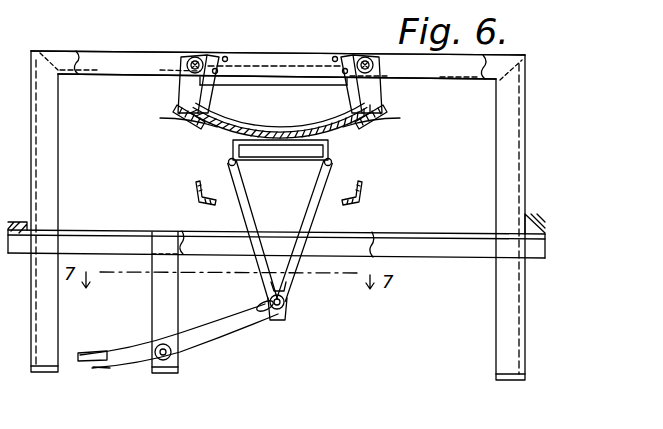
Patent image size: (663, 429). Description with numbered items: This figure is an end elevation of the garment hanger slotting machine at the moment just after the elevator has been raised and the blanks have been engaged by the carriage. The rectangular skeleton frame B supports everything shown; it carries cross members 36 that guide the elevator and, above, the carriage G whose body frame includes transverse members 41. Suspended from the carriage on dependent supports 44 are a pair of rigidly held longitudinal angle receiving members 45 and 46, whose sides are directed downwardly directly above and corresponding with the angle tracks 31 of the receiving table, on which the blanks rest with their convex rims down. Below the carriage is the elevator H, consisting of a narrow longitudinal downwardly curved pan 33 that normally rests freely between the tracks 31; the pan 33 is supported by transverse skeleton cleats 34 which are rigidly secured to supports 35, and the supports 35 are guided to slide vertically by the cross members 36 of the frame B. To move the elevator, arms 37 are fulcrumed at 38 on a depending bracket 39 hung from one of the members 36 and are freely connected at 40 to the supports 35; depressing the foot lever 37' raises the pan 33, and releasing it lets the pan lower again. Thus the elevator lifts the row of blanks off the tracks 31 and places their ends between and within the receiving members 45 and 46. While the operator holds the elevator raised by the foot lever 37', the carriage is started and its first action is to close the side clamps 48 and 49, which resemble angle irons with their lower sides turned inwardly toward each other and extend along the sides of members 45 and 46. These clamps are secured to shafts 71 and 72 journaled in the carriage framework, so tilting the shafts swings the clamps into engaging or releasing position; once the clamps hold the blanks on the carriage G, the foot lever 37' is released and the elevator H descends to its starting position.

The frame B is at (527, 142).
The cross members 36 is at (459, 236).
The transverse members 41 is at (143, 50).
The shaft 71 is at (198, 55).
The shaft 72 is at (365, 55).
The side clamp 48 is at (177, 97).
The side clamp 49 is at (383, 110).
The angle receiving member 45 is at (178, 113).
The angle receiving member 46 is at (382, 115).
The carriage G is at (263, 50).
The dependent supports 44 is at (237, 58).
The pan 33 is at (303, 130).
The elevator H is at (273, 127).
The skeleton cleats 34 is at (335, 150).
The supports 35 is at (308, 210).
The connection 40 is at (285, 312).
The arms 37 is at (179, 343).
The foot lever 37' is at (95, 376).
The fulcrum 38 is at (166, 361).
The depending bracket 39 is at (160, 315).
The angle tracks 31 is at (193, 192).